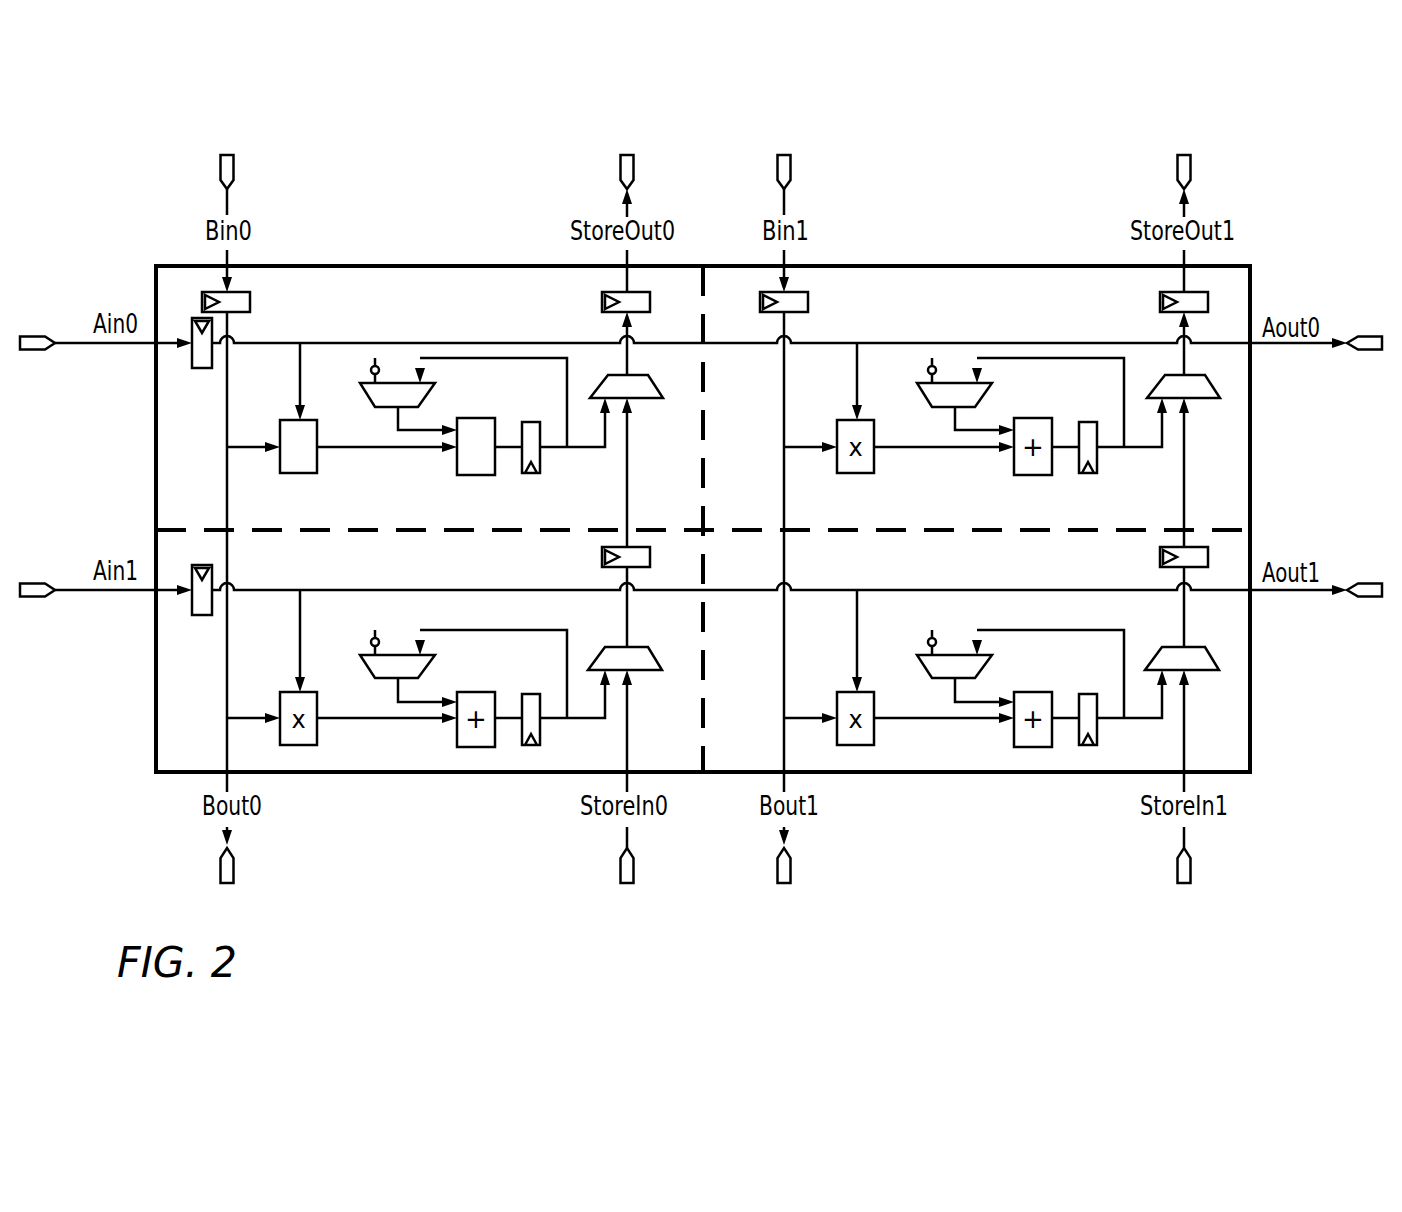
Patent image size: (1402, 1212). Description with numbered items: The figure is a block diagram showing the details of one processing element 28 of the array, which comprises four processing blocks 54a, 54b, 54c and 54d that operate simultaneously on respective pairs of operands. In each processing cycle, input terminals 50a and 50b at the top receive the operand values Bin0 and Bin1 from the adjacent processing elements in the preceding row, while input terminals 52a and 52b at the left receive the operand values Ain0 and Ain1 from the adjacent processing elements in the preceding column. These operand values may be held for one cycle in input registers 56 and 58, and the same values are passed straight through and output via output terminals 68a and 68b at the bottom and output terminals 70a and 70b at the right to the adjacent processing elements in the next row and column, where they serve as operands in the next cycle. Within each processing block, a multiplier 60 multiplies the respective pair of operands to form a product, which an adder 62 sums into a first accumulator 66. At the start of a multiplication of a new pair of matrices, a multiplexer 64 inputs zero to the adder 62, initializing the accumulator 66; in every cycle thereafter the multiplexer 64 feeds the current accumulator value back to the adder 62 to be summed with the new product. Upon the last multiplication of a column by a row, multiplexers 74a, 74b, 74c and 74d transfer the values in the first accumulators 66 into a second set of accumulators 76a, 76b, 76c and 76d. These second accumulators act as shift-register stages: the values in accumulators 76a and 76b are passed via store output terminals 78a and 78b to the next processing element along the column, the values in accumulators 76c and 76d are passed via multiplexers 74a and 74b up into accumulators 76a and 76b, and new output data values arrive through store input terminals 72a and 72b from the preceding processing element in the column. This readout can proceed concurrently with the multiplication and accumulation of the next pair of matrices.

The processing element 28 is at (352, 266).
The input terminal 50a is at (233, 172).
The input terminal 50b is at (790, 172).
The input terminal 52a is at (38, 349).
The input terminal 52b is at (38, 597).
The processing block 54a is at (496, 400).
The processing block 54b is at (1051, 375).
The processing block 54c is at (453, 652).
The processing block 54d is at (1051, 652).
The input register 56 is at (250, 302).
The input register 58 is at (202, 368).
The multiplier 60 is at (300, 473).
The adder 62 is at (478, 475).
The multiplexer 64 is at (430, 393).
The first accumulator 66 is at (531, 473).
The output terminal 68a is at (233, 870).
The output terminal 68b is at (790, 870).
The output terminal 70a is at (1370, 349).
The output terminal 70b is at (1370, 597).
The store input terminal 72a is at (620, 868).
The store input terminal 72b is at (1177, 868).
The multiplexer 74a is at (660, 386).
The multiplexer 74b is at (1217, 386).
The multiplexer 74c is at (655, 672).
The multiplexer 74d is at (1215, 658).
The second accumulator 76a is at (602, 302).
The second accumulator 76b is at (1160, 302).
The second accumulator 76c is at (602, 557).
The second accumulator 76d is at (1160, 557).
The store output terminal 78a is at (620, 165).
The store output terminal 78b is at (1177, 165).